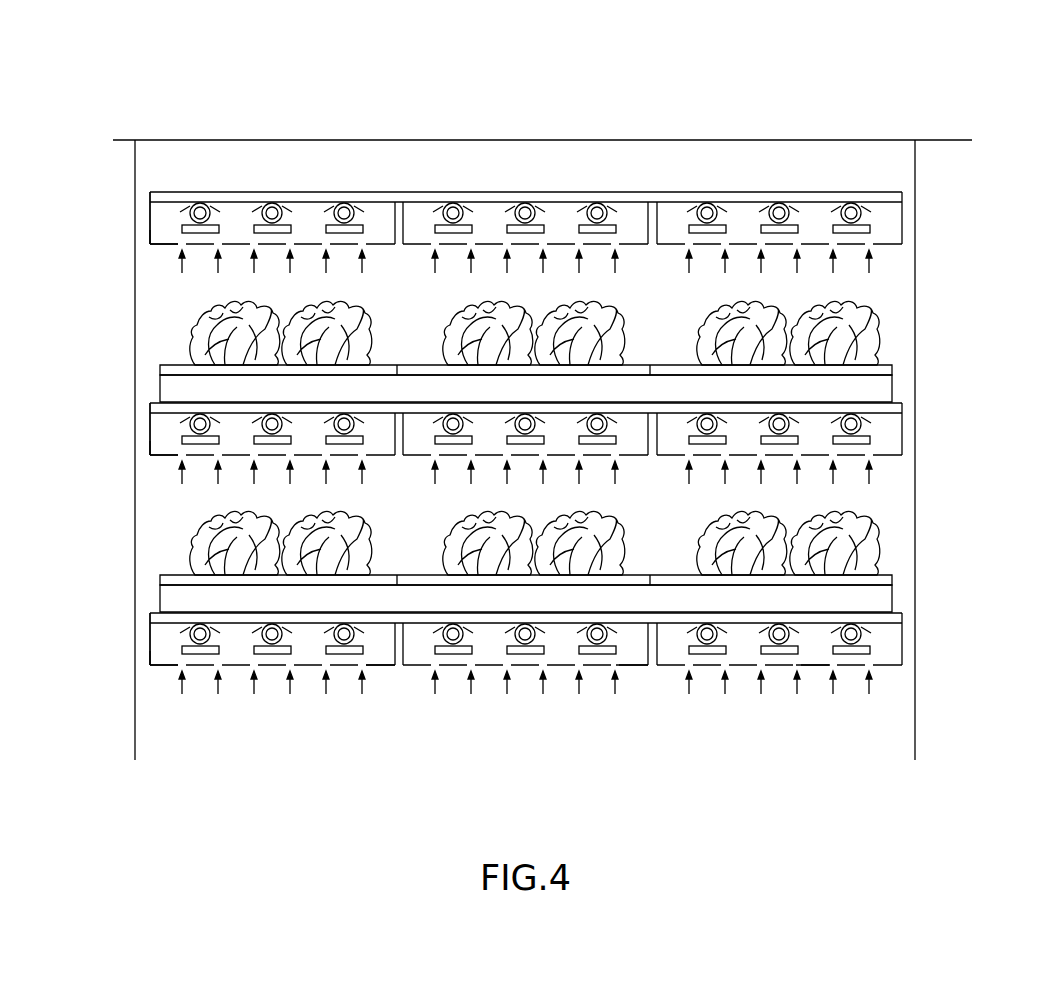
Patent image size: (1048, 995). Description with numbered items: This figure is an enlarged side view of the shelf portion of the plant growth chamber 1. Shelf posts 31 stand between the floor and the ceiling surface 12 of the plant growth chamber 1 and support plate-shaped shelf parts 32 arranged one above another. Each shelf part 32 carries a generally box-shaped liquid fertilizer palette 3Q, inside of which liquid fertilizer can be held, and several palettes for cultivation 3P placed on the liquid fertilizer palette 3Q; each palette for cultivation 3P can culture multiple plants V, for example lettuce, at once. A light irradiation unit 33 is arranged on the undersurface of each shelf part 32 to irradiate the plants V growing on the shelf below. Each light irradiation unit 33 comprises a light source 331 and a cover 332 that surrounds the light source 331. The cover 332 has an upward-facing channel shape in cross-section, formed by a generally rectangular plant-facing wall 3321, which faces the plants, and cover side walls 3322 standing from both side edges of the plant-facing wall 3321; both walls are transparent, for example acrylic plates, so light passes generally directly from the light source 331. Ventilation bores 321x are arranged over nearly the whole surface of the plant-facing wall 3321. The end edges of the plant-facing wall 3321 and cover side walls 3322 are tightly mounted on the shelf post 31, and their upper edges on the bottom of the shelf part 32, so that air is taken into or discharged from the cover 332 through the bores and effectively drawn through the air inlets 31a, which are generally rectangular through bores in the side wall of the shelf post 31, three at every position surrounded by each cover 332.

The plant growth chamber 1 is at (461, 102).
The ceiling surface 12 is at (940, 141).
The shelf post 31 is at (915, 257).
The air inlet 31a is at (272, 234).
The shelf part 32 is at (893, 397).
The light irradiation unit 33 is at (93, 182).
The light source 331 is at (198, 416).
The cover 332 is at (137, 225).
The plant-facing wall 3321 is at (163, 245).
The cover side wall 3322 is at (150, 237).
The air outlet opening 321x is at (370, 666).
The palette for cultivation 3P is at (177, 573).
The liquid fertilizer palette 3Q is at (893, 373).
The plant V is at (205, 330).